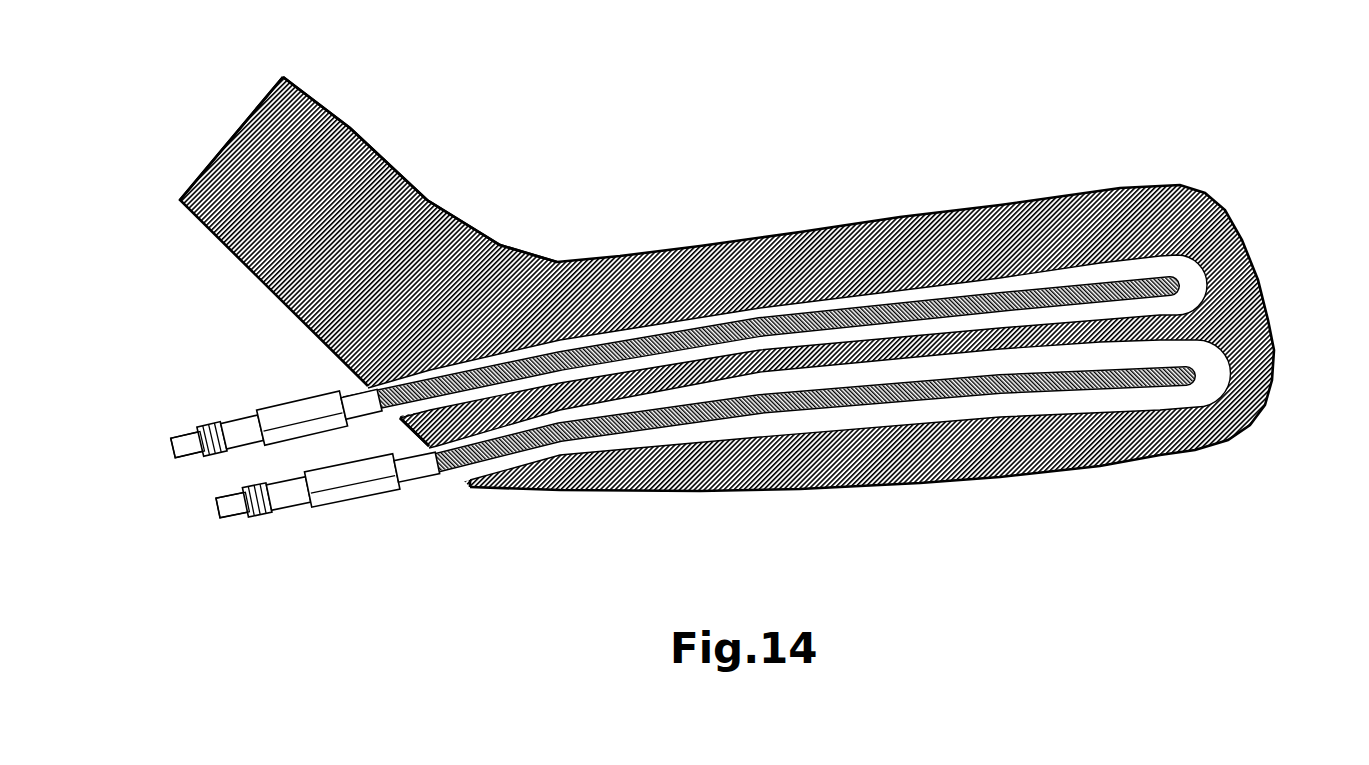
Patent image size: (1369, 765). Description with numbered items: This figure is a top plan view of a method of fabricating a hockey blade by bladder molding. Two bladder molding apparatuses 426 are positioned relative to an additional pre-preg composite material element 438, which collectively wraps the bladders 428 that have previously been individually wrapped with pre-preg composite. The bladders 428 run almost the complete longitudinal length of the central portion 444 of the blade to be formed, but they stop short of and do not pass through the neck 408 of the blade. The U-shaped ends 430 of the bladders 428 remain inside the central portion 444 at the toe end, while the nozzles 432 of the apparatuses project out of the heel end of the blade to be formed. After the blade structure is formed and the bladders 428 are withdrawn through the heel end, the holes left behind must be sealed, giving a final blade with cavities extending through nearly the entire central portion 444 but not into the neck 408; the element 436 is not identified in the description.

The neck 408 is at (405, 122).
The additional pre-preg composite material element 438 is at (826, 224).
The U-shaped ends 430 is at (1272, 326).
The nozzles 432 is at (165, 420).
The bladder molding apparatuses 426 is at (145, 460).
The bladders 428 is at (340, 378).
The sleeve opening 436 is at (475, 502).
The central portion 444 is at (849, 513).